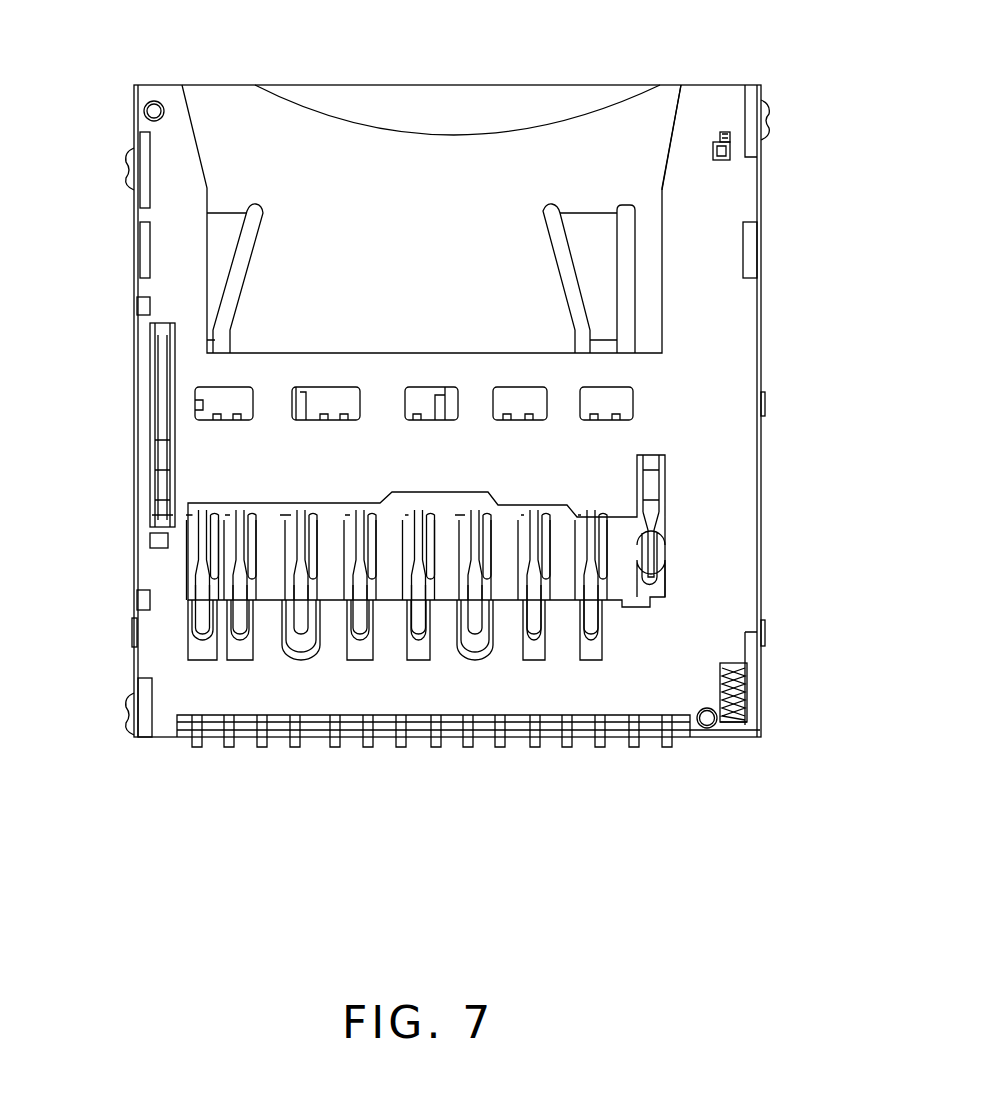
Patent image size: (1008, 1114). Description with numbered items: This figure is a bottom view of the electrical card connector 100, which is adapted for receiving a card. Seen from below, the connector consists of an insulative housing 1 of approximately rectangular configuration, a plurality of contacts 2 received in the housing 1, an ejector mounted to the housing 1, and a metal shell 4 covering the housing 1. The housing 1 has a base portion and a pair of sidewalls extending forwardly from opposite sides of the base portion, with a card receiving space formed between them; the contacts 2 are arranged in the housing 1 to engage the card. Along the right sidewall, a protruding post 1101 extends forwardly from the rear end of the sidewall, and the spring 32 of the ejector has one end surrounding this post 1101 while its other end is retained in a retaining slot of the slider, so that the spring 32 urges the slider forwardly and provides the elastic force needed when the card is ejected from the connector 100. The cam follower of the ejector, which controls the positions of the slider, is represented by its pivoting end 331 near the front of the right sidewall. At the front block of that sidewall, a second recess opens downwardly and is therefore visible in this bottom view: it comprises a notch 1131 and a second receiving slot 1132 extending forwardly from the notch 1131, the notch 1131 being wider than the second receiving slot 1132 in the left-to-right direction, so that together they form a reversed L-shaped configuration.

The electrical card connector 100 is at (434, 70).
The insulative housing 1 is at (178, 250).
The contacts 2 is at (290, 748).
The metal shell 4 is at (233, 122).
The spring 32 is at (747, 675).
The pivoting end 331 is at (727, 131).
The protruding post 1101 is at (747, 717).
The notch 1131 is at (713, 147).
The second receiving slot 1132 is at (682, 95).